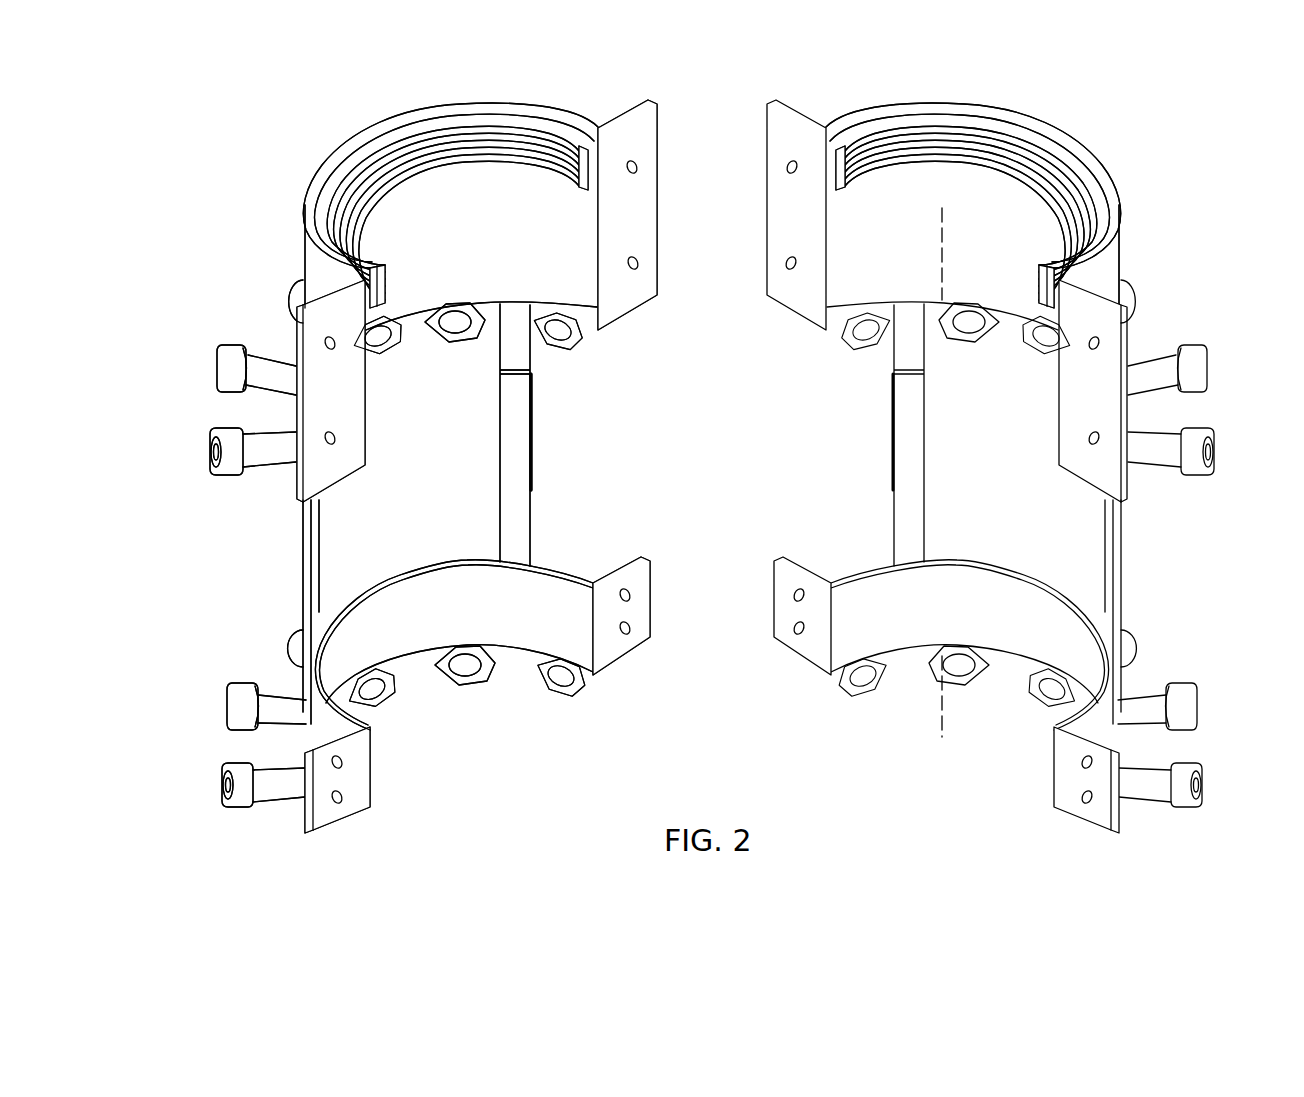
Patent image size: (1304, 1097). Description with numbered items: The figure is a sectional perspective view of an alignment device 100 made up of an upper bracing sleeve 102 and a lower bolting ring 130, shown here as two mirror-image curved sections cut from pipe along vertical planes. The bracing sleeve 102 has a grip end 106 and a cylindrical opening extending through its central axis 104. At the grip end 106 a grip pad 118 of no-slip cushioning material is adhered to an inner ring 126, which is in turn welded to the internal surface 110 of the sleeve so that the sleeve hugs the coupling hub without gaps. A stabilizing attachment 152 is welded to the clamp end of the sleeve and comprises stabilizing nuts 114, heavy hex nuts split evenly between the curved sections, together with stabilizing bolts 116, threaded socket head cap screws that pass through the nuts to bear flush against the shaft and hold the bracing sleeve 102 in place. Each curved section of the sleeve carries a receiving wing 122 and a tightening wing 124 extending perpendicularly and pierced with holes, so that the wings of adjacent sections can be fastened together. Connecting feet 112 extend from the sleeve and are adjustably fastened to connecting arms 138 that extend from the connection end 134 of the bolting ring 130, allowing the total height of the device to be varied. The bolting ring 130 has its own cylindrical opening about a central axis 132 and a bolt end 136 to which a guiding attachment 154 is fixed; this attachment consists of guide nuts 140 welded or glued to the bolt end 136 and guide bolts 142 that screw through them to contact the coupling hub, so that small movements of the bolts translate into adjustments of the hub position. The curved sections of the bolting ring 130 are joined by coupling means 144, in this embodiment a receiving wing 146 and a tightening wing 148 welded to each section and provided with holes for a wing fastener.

The alignment device 100 is at (720, 479).
The bracing sleeve 102 is at (1026, 479).
The central axis 104 is at (942, 222).
The grip end 106 is at (1077, 118).
The internal surface 110 is at (962, 116).
The connecting foot 112 is at (300, 537).
The stabilizing nuts 114 is at (600, 348).
The stabilizing bolts 116 is at (1200, 430).
The grip pad 118 is at (928, 150).
The receiving wing 122 is at (295, 405).
The tightening wing 124 is at (1120, 270).
The inner ring 126 is at (1116, 165).
The bolting ring 130 is at (1200, 746).
The central axis 132 is at (942, 718).
The connection end 134 is at (1142, 652).
The bolt end 136 is at (430, 742).
The connecting arm 138 is at (307, 600).
The guide nuts 140 is at (396, 690).
The guide bolts 142 is at (236, 768).
The coupling means 144 is at (1130, 836).
The receiving wing 146 is at (1126, 815).
The tightening wing 148 is at (302, 820).
The stabilizing attachment 152 is at (268, 337).
The guiding attachment 154 is at (276, 683).